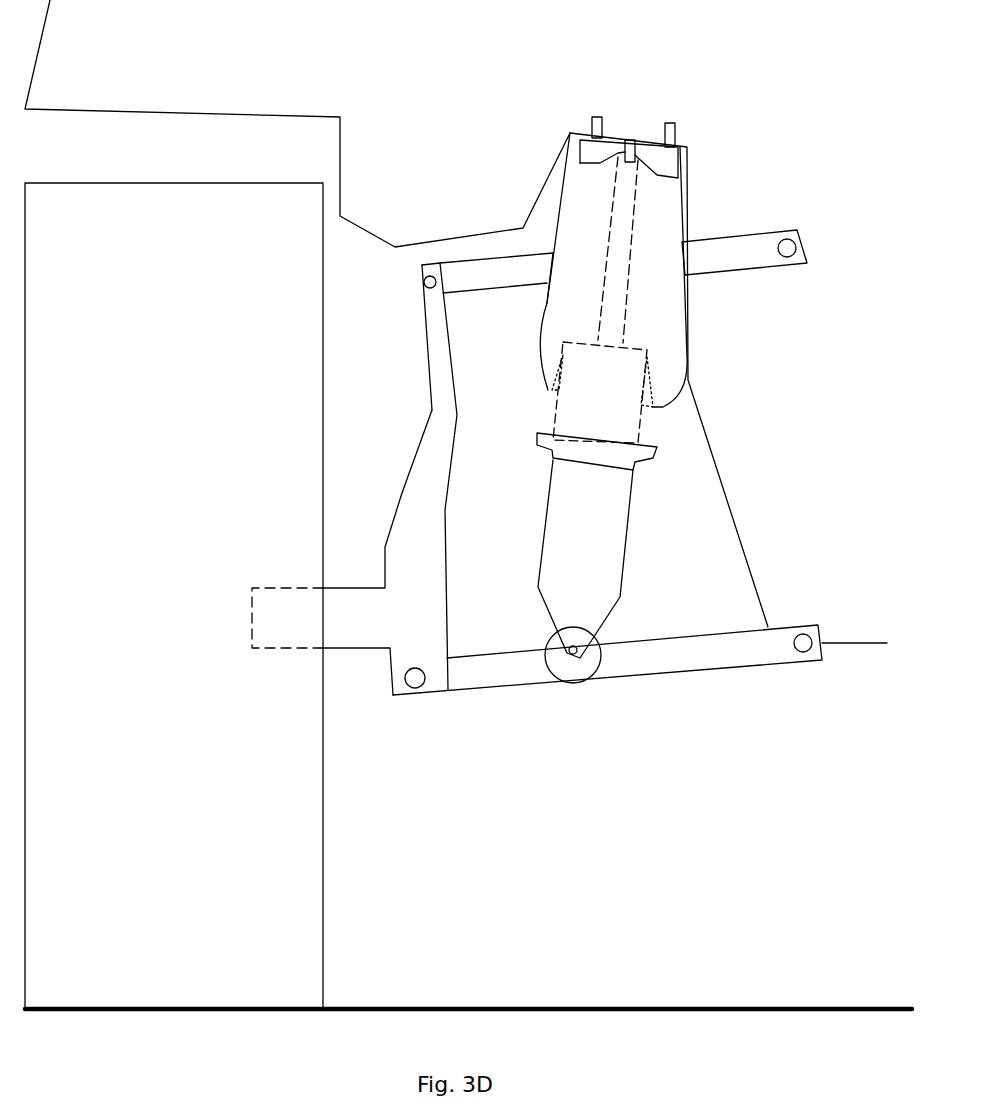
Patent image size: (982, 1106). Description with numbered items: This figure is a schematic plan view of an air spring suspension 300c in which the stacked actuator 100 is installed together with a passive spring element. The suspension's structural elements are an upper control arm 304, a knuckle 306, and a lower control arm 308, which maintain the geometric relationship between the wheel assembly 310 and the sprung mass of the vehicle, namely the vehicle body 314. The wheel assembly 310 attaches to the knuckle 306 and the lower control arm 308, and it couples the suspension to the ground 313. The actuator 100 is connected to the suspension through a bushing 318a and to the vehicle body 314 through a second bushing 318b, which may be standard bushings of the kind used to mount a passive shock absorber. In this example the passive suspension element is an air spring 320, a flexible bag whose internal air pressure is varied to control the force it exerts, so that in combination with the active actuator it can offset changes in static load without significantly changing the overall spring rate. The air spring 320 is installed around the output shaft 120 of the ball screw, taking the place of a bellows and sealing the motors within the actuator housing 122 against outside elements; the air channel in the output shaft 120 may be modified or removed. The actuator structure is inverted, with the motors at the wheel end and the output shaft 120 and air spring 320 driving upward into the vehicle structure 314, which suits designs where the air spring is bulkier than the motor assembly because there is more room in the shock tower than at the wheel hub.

The stacked actuator 100 is at (640, 362).
The output shaft 120 is at (600, 290).
The actuator housing 122 is at (547, 507).
The air spring suspension 300c is at (397, 372).
The upper control arm 304 is at (712, 258).
The knuckle 306 is at (443, 423).
The lower control arm 308 is at (697, 652).
The wheel assembly 310 is at (212, 394).
The ground 313 is at (468, 1039).
The vehicle body 314 is at (774, 474).
The bushing 318a is at (545, 647).
The second bushing 318b is at (587, 112).
The air spring 320 is at (547, 303).